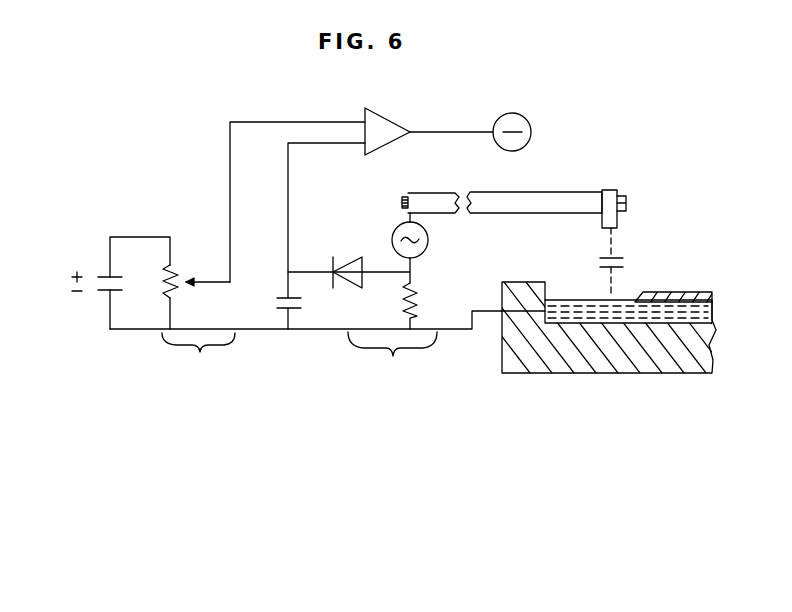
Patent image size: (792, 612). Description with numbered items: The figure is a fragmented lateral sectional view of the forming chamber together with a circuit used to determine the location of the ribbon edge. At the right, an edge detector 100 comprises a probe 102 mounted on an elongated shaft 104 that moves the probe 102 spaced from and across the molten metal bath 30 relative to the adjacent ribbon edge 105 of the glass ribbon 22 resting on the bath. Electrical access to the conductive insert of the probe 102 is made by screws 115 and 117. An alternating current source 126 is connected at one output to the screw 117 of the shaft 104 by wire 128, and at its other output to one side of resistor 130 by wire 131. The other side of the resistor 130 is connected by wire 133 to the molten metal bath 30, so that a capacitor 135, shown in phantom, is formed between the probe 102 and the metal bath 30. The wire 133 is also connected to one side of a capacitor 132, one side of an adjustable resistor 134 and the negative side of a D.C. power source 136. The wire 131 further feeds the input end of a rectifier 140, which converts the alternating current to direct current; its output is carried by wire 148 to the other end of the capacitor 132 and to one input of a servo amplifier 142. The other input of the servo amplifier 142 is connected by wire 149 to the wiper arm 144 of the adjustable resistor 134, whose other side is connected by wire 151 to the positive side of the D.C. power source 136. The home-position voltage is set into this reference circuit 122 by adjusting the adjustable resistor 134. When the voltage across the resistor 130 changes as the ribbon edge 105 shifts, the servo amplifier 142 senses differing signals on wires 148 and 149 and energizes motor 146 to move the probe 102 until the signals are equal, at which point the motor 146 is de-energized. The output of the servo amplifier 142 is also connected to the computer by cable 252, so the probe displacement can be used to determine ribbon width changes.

The liquid layer 22 is at (712, 298).
The molten metal bath 30 is at (712, 310).
The edge detector 100 is at (645, 174).
The probe 102 is at (612, 220).
The elongated shaft 104 is at (562, 188).
The ribbon edge 105 is at (651, 292).
The screw 115 is at (627, 200).
The screw 117 is at (405, 196).
The reference circuit 122 is at (135, 336).
The alternating current source 126 is at (428, 241).
The wire 128 is at (406, 213).
The resistor 130 is at (421, 300).
The wire 131 is at (382, 270).
The capacitor 132 is at (301, 302).
The wire 133 is at (299, 358).
The adjustable resistor 134 is at (188, 292).
The capacitor 135 is at (598, 260).
The D.C. power source 136 is at (101, 298).
The rectifier 140 is at (356, 258).
The servo amplifier 142 is at (384, 110).
The wiper arm 144 is at (187, 280).
The motor 146 is at (536, 112).
The wire 148 is at (322, 145).
The wire 149 is at (321, 122).
The wire 151 is at (141, 237).
The cable 252 is at (462, 132).